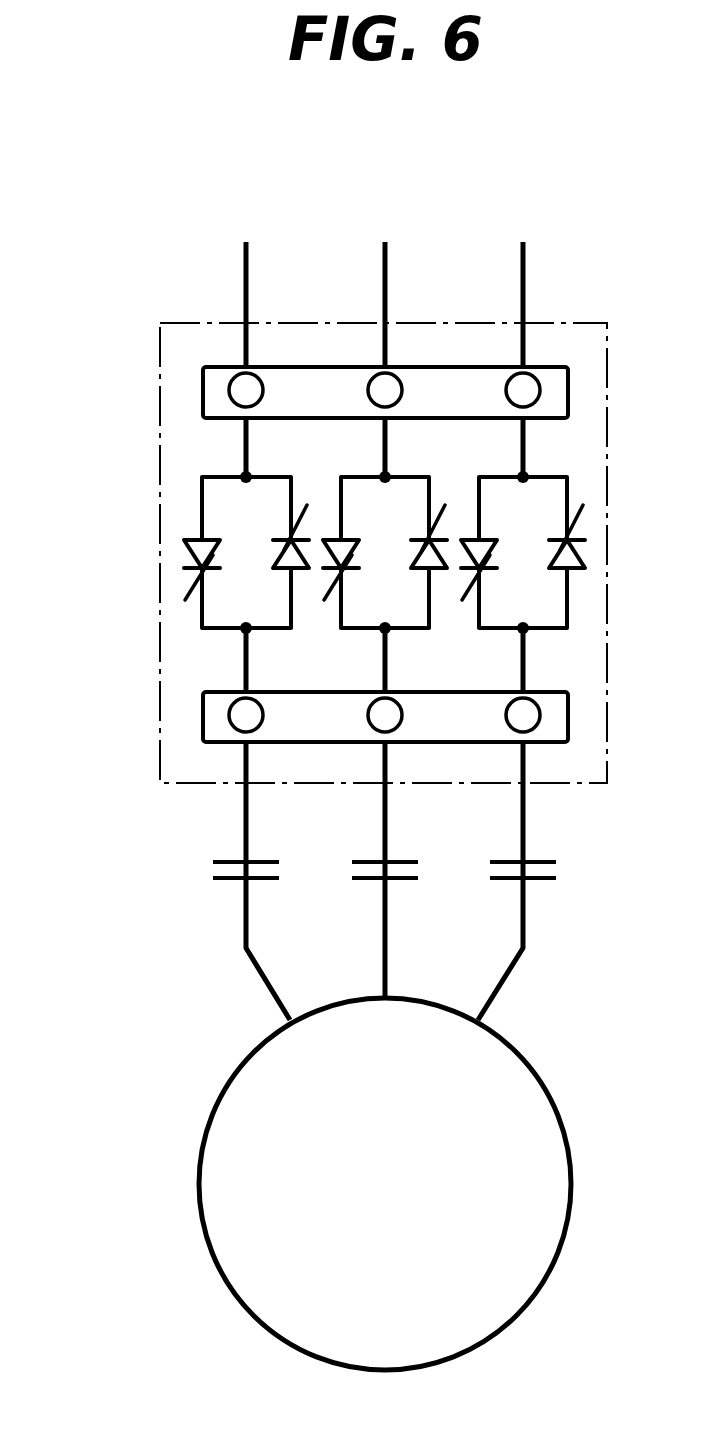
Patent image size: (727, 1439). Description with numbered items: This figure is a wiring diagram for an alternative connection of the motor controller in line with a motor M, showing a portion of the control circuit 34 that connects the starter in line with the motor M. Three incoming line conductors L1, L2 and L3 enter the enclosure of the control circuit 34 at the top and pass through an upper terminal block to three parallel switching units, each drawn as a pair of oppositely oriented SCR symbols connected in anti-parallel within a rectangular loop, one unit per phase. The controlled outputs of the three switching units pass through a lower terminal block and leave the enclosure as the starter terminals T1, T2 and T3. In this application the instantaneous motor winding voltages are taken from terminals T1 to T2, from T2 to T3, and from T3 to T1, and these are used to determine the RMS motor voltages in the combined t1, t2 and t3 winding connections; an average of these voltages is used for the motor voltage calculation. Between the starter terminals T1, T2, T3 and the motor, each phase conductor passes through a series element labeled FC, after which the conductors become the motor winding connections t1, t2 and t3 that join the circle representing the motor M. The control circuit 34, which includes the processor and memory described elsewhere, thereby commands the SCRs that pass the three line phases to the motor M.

The control circuit 34 is at (150, 518).
The line terminal L1 is at (248, 280).
The line terminal L2 is at (387, 280).
The line terminal L3 is at (525, 280).
The terminal T1 is at (225, 802).
The terminal T2 is at (364, 802).
The terminal T3 is at (503, 802).
The element FC is at (404, 870).
The winding connection t1 is at (245, 949).
The winding connection t2 is at (362, 938).
The winding connection t3 is at (500, 949).
The motor M is at (530, 1064).